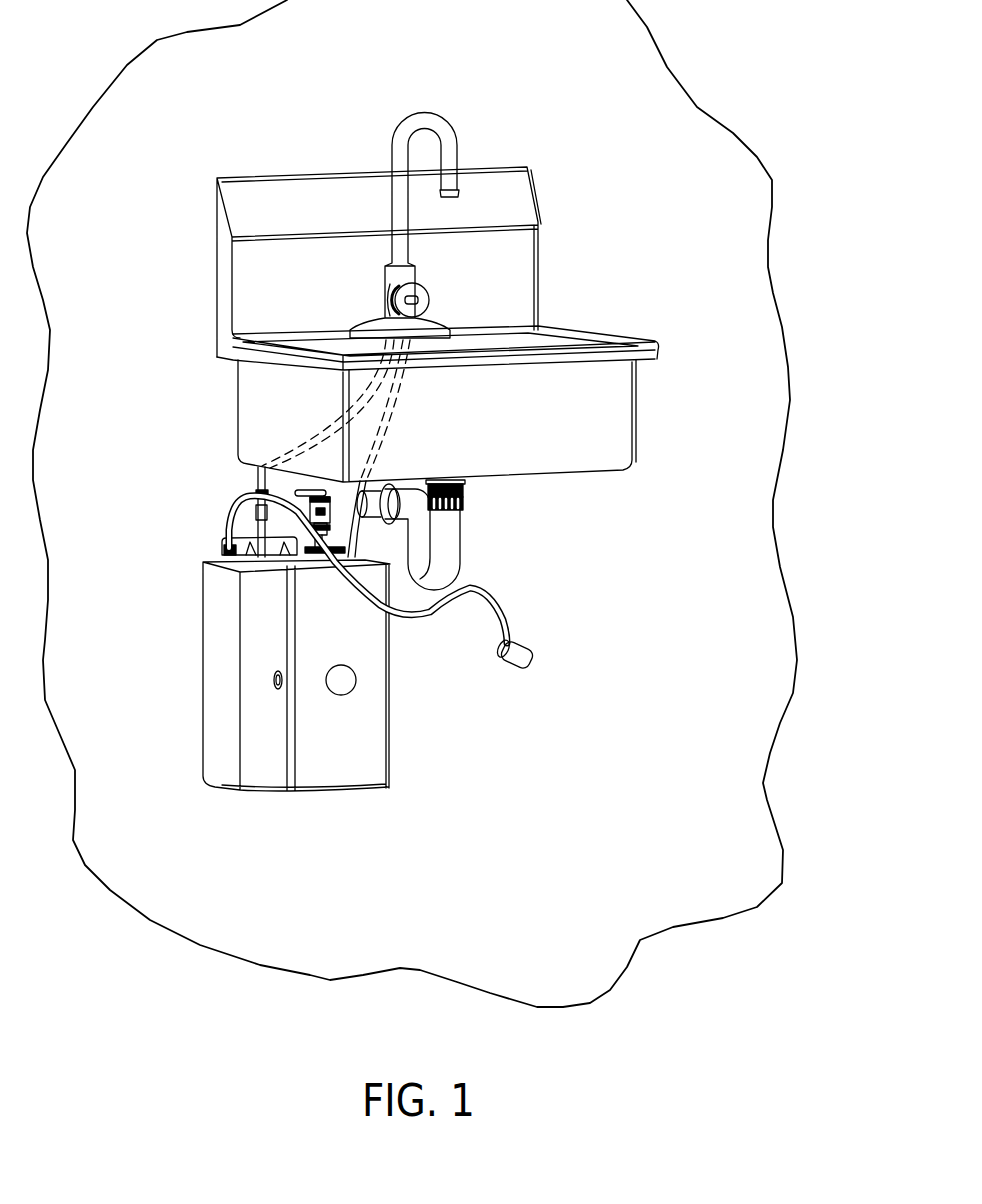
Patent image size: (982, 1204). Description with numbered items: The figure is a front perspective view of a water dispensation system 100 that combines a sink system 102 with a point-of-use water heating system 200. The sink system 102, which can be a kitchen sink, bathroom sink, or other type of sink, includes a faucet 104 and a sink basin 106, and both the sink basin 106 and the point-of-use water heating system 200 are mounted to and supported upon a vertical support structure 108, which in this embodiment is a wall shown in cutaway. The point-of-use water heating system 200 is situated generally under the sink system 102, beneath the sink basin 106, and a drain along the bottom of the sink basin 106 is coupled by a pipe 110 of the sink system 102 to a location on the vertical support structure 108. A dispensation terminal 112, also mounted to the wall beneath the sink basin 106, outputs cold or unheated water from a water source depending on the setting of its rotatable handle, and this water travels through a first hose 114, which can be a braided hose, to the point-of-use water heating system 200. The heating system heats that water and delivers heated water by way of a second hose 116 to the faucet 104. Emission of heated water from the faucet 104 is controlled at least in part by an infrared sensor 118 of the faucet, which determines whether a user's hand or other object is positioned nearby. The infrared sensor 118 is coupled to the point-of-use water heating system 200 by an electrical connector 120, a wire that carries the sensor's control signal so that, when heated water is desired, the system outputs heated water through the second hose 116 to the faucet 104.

The water dispensation system 100 is at (435, 503).
The sink system 102 is at (457, 234).
The faucet 104 is at (462, 128).
The sink basin 106 is at (558, 480).
The vertical support structure 108 is at (740, 752).
The pipe 110 is at (463, 532).
The dispensation terminal 112 is at (534, 630).
The first hose 114 is at (421, 617).
The second hose 116 is at (343, 493).
The infrared sensor 118 is at (439, 281).
The electrical connector 120 is at (248, 478).
The point-of-use water heating system 200 is at (272, 802).